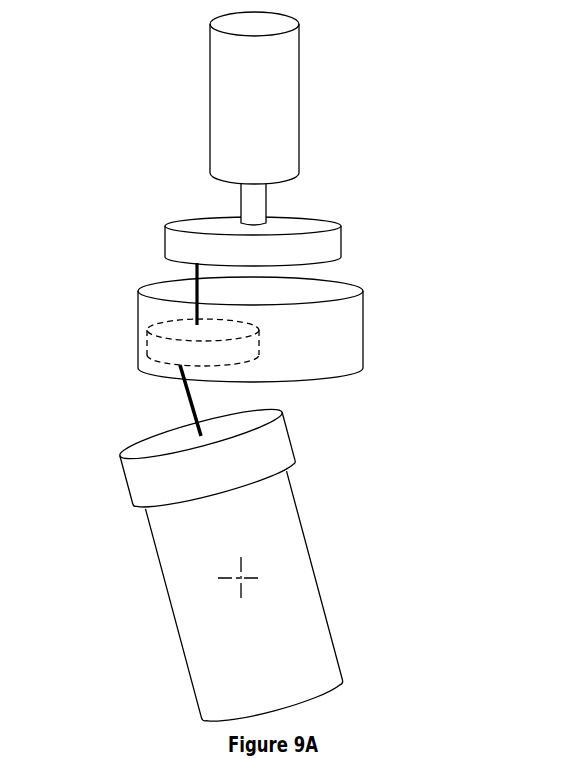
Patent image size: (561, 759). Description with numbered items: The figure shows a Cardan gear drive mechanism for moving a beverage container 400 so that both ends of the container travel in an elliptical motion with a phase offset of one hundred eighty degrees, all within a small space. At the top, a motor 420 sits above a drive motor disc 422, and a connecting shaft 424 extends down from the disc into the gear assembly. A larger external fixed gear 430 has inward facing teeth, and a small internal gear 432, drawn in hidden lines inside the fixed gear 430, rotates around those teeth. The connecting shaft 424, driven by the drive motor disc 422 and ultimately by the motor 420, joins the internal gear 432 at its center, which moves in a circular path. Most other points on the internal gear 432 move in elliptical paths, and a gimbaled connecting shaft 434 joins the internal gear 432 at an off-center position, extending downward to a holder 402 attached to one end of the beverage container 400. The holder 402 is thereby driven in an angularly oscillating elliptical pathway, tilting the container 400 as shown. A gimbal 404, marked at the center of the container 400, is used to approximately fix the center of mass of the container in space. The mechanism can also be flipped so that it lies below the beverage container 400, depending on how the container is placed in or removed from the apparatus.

The motor 420 is at (210, 94).
The drive motor disc 422 is at (170, 237).
The connecting shaft 424 is at (181, 289).
The external fixed gear 430 is at (374, 326).
The internal gear 432 is at (272, 328).
The gimbaled connecting shaft 434 is at (172, 409).
The beverage container 400 is at (316, 536).
The holder 402 is at (304, 451).
The gimbal 404 is at (276, 578).